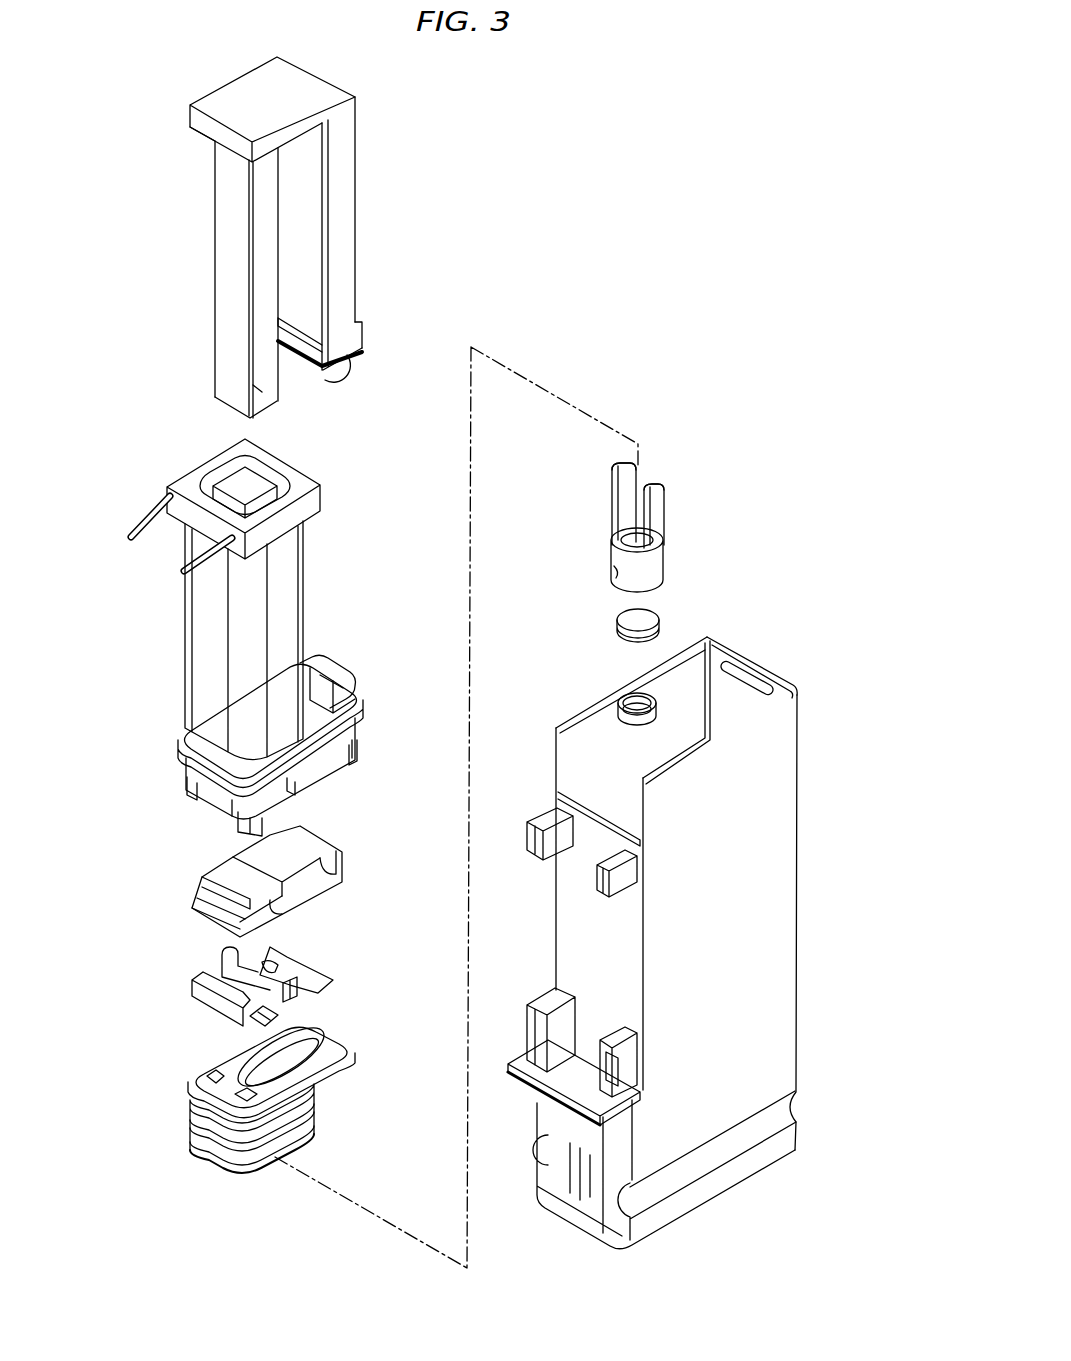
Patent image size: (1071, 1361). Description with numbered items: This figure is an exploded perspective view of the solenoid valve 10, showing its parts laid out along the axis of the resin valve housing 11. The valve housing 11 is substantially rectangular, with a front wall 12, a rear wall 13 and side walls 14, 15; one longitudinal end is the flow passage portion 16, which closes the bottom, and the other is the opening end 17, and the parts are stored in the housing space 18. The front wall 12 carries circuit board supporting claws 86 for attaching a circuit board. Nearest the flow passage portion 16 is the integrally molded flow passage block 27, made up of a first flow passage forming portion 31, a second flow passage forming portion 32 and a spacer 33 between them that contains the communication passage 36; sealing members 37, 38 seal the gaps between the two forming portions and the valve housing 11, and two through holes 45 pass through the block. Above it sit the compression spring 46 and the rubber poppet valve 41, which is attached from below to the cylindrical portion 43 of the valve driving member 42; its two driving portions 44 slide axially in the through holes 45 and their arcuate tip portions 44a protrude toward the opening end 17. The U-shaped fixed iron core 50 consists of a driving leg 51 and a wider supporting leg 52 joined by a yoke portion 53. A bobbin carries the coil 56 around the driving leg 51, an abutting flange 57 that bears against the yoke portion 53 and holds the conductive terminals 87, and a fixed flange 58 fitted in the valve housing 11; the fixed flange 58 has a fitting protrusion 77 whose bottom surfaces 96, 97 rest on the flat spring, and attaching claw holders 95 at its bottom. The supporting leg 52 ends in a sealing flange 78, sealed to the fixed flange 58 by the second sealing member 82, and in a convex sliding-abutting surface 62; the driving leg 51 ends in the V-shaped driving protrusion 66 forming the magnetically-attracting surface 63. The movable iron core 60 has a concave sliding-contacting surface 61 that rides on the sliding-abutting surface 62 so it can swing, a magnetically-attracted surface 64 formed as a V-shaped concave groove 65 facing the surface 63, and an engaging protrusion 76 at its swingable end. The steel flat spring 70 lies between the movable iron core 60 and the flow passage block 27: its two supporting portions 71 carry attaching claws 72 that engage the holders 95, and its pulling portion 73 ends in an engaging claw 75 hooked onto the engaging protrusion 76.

The solenoid valve 10 is at (680, 841).
The valve housing 11 is at (680, 939).
The front wall 12 is at (570, 902).
The rear wall 13 is at (798, 688).
The side wall 14 is at (568, 718).
The side wall 15 is at (787, 777).
The flow passage portion 16 is at (730, 1178).
The opening end 17 is at (663, 677).
The housing space 18 is at (585, 747).
The flow passage block 27 is at (276, 1126).
The first flow passage forming portion 31 is at (232, 1170).
The second flow passage forming portion 32 is at (235, 1070).
The spacer 33 is at (208, 1148).
The communication passage 36 is at (198, 1128).
The sealing member 37 is at (277, 1165).
The sealing member 38 is at (337, 1082).
The poppet valve 41 is at (650, 614).
The valve driving member 42 is at (639, 505).
The cylindrical portion 43 is at (620, 568).
The driving portion 44 is at (634, 483).
The tip portion 44a is at (612, 468).
The through hole 45 is at (208, 1077).
The compression spring 46 is at (625, 702).
The fixed iron core 50 is at (282, 244).
The driving leg 51 is at (241, 279).
The supporting leg 52 is at (359, 249).
The yoke portion 53 is at (228, 88).
The coil 56 is at (295, 614).
The abutting flange 57 is at (222, 520).
The fixed flange 58 is at (282, 745).
The movable iron core 60 is at (263, 868).
The sliding-contacting surface 61 is at (336, 866).
The sliding-abutting surface 62 is at (345, 378).
The magnetically-attracting surface 63 is at (270, 412).
The magnetically-attracted surface 64 is at (268, 920).
The concave groove 65 is at (235, 872).
The driving protrusion 66 is at (262, 398).
The flat spring 70 is at (256, 997).
The supporting portion 71 is at (258, 1020).
The attaching claw 72 is at (322, 1000).
The pulling portion 73 is at (300, 970).
The engaging claw 75 is at (200, 995).
The engaging protrusion 76 is at (200, 903).
The fitting protrusion 77 is at (343, 755).
The sealing flange 78 is at (362, 332).
The second sealing member 82 is at (355, 350).
The circuit board supporting claw 86 is at (555, 808).
The conductive terminal 87 is at (128, 540).
The attaching claw holder 95 is at (297, 796).
The bottom surface 96 is at (345, 770).
The bottom surface 97 is at (190, 797).